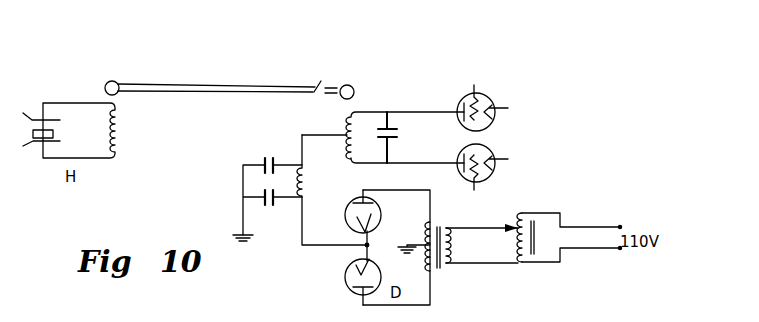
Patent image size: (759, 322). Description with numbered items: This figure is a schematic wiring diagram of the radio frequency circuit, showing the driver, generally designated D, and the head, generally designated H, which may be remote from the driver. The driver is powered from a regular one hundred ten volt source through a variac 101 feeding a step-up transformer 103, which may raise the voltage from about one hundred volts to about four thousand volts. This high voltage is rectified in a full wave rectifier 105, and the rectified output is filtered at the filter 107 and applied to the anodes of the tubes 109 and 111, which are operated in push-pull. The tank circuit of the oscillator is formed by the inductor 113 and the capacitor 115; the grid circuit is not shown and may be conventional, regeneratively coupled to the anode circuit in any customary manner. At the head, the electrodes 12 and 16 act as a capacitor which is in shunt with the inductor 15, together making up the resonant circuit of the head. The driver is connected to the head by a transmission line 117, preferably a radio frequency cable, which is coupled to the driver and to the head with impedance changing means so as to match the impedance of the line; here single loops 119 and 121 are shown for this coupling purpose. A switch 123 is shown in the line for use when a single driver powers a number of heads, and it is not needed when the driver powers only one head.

The electrode 12 is at (58, 139).
The inductor 15 is at (118, 132).
The electrode 16 is at (58, 118).
The variac 101 is at (521, 214).
The step-up transformer 103 is at (441, 268).
The full wave rectifier 105 is at (377, 247).
The filter 107 is at (309, 180).
The tube 109 is at (488, 98).
The tube 111 is at (487, 178).
The inductor 113 is at (346, 122).
The capacitor 115 is at (398, 136).
The transmission line 117 is at (204, 93).
The single loop 119 is at (354, 92).
The single loop 121 is at (105, 88).
The switch 123 is at (321, 81).